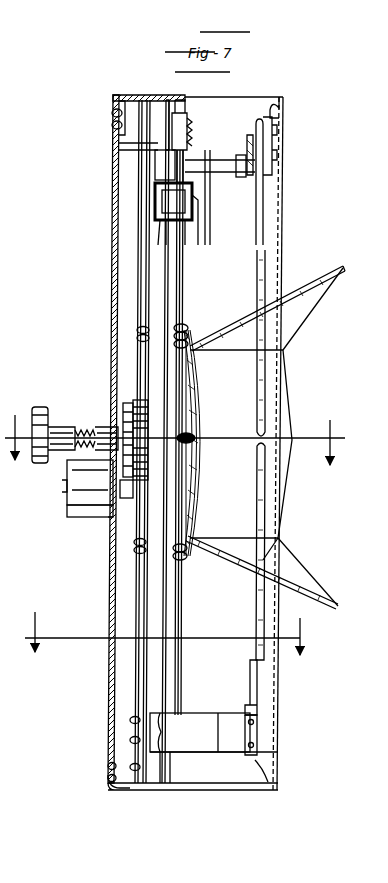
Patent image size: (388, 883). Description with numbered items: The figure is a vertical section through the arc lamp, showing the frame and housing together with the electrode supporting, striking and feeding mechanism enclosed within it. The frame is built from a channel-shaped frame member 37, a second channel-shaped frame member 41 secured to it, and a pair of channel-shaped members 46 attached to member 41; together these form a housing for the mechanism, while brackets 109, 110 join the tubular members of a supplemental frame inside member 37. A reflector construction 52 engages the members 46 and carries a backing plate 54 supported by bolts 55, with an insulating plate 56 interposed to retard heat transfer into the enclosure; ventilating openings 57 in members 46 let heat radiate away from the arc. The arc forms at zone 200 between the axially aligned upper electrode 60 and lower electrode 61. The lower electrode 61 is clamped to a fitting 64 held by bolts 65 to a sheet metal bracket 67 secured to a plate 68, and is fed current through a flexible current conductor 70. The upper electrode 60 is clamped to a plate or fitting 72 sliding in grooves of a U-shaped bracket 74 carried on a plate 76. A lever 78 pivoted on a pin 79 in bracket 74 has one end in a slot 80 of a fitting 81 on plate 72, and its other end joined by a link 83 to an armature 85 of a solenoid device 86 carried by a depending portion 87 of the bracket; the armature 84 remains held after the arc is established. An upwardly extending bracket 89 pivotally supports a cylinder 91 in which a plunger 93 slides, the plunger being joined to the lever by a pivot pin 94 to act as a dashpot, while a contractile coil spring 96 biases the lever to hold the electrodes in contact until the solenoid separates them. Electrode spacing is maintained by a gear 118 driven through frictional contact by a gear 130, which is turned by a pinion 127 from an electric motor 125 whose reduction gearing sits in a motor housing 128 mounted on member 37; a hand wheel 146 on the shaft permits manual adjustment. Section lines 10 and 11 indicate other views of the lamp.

The section line 10- 10 is at (174, 431).
The section line 11- 11 is at (165, 624).
The frame member 37 is at (112, 690).
The second channel-shaped frame member 41 is at (182, 696).
The channel-shaped members 46 is at (281, 218).
The reflector construction 52 is at (335, 265).
The backing plate 54 is at (189, 332).
The bolts 55 is at (190, 342).
The insulating plate 56 is at (188, 325).
The ventilating openings 57 is at (283, 280).
The upper electrode 60 is at (268, 370).
The lower electrode 61 is at (268, 502).
The fitting 64 is at (258, 694).
The bolts 65 is at (255, 745).
The bracket 67 is at (208, 752).
The plate 68 is at (150, 765).
The flexible current conductor 70 is at (285, 100).
The plate or fitting 72 is at (265, 192).
The U-shaped bracket 74 is at (212, 185).
The plate 76 is at (163, 98).
The lever 78 is at (216, 158).
The pin 79 is at (200, 210).
The slot 80 is at (275, 137).
The fitting 81 is at (222, 178).
The link 83 is at (158, 172).
The armature 84 is at (190, 235).
The armature 85 is at (192, 222).
The solenoid device 86 is at (190, 250).
The depending portion 87 is at (168, 204).
The upwardly extending bracket 89 is at (187, 125).
The cylinder 91 is at (189, 130).
The plunger 93 is at (158, 150).
The pivot pin 94 is at (157, 160).
The contractile coil spring 96 is at (192, 135).
The bracket 109 is at (112, 118).
The bracket 110 is at (125, 790).
The gear 118 is at (140, 400).
The electric motor 125 is at (78, 527).
The pinion 127 is at (118, 540).
The motor housing 128 is at (68, 510).
The gear 130 is at (128, 403).
The hand wheel 146 is at (40, 407).
The zone 200 is at (268, 440).